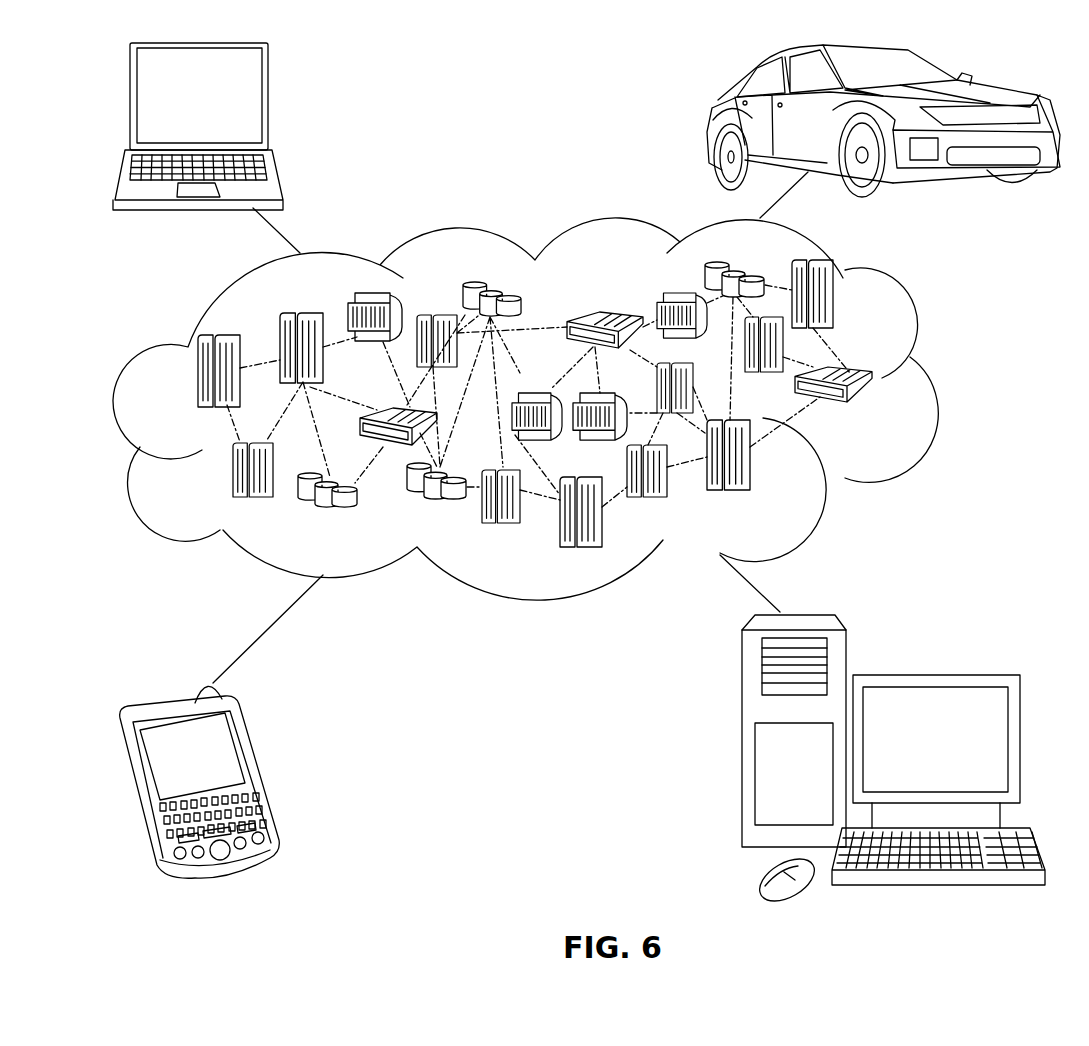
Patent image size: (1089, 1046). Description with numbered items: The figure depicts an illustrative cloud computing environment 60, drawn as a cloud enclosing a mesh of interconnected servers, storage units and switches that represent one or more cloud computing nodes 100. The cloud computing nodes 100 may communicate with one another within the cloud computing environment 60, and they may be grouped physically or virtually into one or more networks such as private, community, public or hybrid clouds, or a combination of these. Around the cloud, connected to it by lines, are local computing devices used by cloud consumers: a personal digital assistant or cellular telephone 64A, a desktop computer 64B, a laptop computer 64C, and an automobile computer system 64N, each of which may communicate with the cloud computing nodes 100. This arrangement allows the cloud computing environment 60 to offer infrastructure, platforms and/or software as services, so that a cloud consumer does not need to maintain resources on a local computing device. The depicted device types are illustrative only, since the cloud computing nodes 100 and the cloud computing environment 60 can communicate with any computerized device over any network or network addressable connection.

The cloud computing environment 60 is at (934, 382).
The cloud computing nodes 100 is at (874, 411).
The personal digital assistant (PDA) or cellular telephone 64A is at (257, 770).
The desktop computer 64B is at (933, 673).
The laptop computer 64C is at (268, 106).
The automobile computer system 64N is at (710, 120).